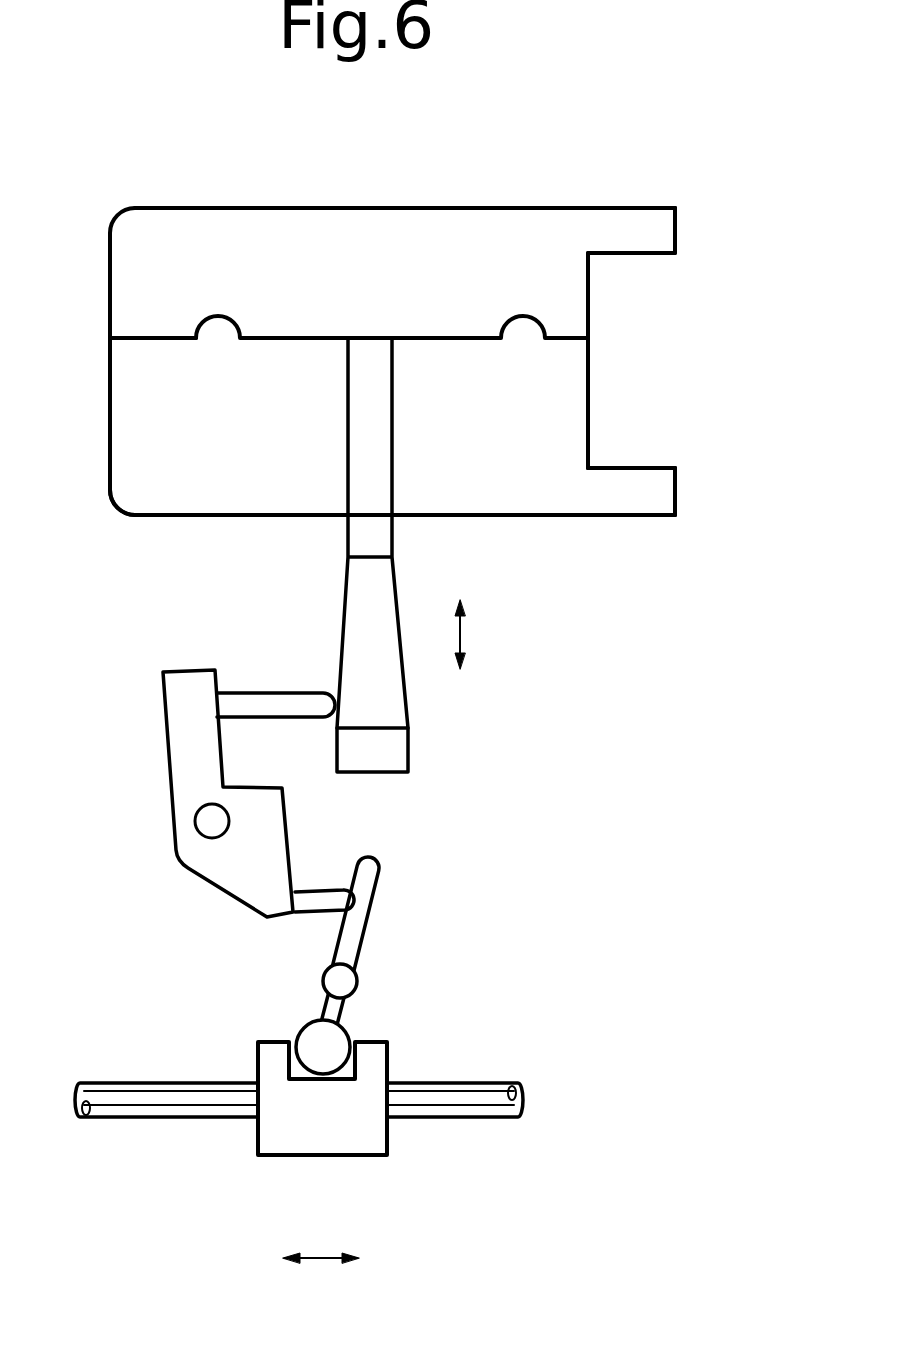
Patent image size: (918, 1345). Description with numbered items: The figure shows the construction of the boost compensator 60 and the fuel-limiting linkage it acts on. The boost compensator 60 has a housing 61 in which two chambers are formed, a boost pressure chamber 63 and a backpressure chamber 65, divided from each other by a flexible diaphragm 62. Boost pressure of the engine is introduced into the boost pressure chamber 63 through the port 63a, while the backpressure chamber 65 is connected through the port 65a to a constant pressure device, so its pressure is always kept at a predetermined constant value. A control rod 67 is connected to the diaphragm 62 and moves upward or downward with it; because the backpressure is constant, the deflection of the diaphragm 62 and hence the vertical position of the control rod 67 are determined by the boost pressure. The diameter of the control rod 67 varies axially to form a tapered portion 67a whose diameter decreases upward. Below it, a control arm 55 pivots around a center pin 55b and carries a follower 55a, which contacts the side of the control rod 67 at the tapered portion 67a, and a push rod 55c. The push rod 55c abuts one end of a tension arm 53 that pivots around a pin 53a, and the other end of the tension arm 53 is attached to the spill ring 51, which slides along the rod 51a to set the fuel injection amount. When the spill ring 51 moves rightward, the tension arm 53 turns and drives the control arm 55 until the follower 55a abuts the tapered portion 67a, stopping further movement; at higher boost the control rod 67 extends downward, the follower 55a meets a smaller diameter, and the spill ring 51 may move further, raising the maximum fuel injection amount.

The spill ring 51 is at (327, 1138).
The rod 51a is at (473, 1100).
The tension arm 53 is at (362, 902).
The pin 53a is at (357, 977).
The control arm 55 is at (182, 707).
The follower 55a is at (275, 693).
The center pin 55b is at (210, 823).
The push rod 55c is at (318, 890).
The boost compensator 60 is at (523, 174).
The housing 61 is at (228, 207).
The flexible diaphragm 62 is at (160, 342).
The boost pressure chamber 63 is at (420, 273).
The port 63a is at (676, 230).
The backpressure chamber 65 is at (502, 428).
The port 65a is at (676, 492).
The control rod 67 is at (392, 462).
The tapered portion 67a is at (408, 686).